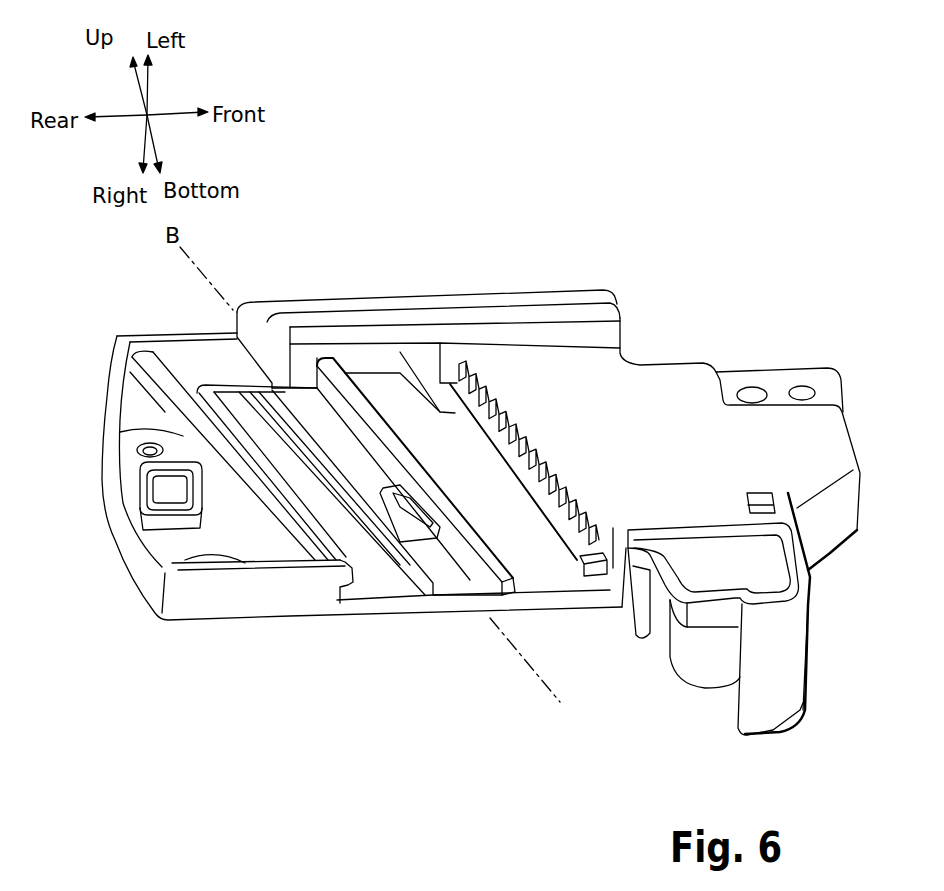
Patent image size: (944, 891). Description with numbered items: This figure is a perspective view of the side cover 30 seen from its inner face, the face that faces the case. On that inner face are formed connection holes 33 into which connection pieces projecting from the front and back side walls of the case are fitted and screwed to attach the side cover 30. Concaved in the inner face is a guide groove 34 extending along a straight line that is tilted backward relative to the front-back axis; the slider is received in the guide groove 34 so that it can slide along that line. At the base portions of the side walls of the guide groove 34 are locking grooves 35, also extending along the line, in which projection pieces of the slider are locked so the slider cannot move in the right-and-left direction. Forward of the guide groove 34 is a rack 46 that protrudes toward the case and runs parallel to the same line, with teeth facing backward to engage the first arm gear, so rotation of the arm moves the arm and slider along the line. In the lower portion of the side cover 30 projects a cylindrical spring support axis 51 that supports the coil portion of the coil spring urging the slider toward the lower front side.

The side cover 30 is at (481, 512).
The connection holes 33 is at (803, 386).
The guide groove 34 is at (377, 592).
The locking grooves 35 is at (348, 593).
The rack 46 is at (468, 370).
The spring support axis 51 is at (690, 672).